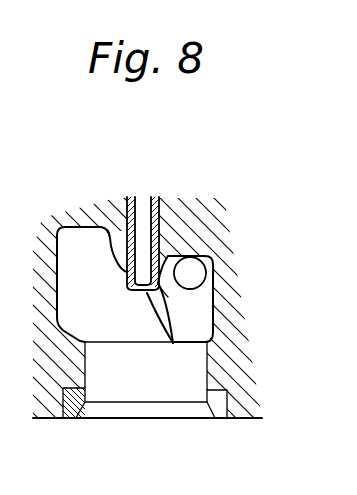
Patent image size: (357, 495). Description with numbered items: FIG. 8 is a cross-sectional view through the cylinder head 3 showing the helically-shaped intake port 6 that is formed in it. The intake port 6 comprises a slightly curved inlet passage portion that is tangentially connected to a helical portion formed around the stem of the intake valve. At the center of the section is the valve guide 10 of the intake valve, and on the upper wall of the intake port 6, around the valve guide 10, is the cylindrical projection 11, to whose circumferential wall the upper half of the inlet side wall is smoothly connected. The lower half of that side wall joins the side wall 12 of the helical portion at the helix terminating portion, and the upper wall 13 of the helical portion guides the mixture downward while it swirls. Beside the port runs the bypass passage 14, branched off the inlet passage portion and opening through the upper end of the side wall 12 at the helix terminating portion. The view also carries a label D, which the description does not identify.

The cylinder head 3 is at (224, 255).
The helically-shaped intake port 6 is at (96, 303).
The valve guide 10 is at (160, 217).
The cylindrical projection 11 is at (101, 227).
The side wall of the helical portion 12 is at (214, 326).
The upper wall of the helical portion 13 is at (198, 257).
The bypass passage 14 is at (196, 280).
The gap distance D is at (166, 292).